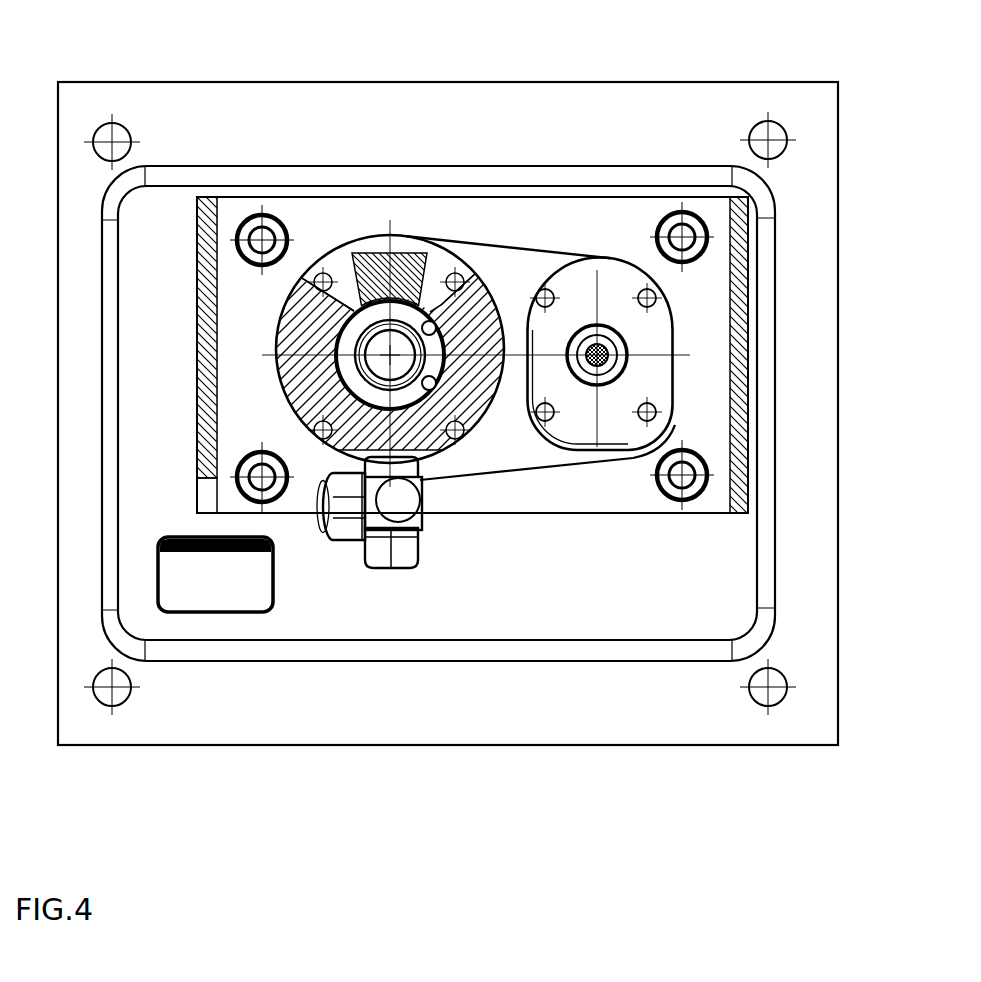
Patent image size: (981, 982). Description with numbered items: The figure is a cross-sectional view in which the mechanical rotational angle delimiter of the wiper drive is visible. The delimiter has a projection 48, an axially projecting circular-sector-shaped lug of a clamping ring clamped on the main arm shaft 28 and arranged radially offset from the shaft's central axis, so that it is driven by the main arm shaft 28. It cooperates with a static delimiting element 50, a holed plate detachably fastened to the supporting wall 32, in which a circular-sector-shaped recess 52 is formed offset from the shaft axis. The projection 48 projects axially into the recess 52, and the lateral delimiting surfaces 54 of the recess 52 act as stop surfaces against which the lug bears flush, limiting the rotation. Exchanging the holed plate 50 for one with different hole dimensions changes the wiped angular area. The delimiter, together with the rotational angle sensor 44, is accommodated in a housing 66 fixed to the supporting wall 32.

The main arm shaft 28 is at (345, 337).
The supporting wall 32 is at (717, 92).
The rotational angle sensor 44 is at (610, 295).
The projection 48 is at (405, 267).
The static delimiting element 50 is at (307, 388).
The recess 52 is at (335, 255).
The delimiting surfaces 54 is at (340, 263).
The housing 66 is at (767, 258).